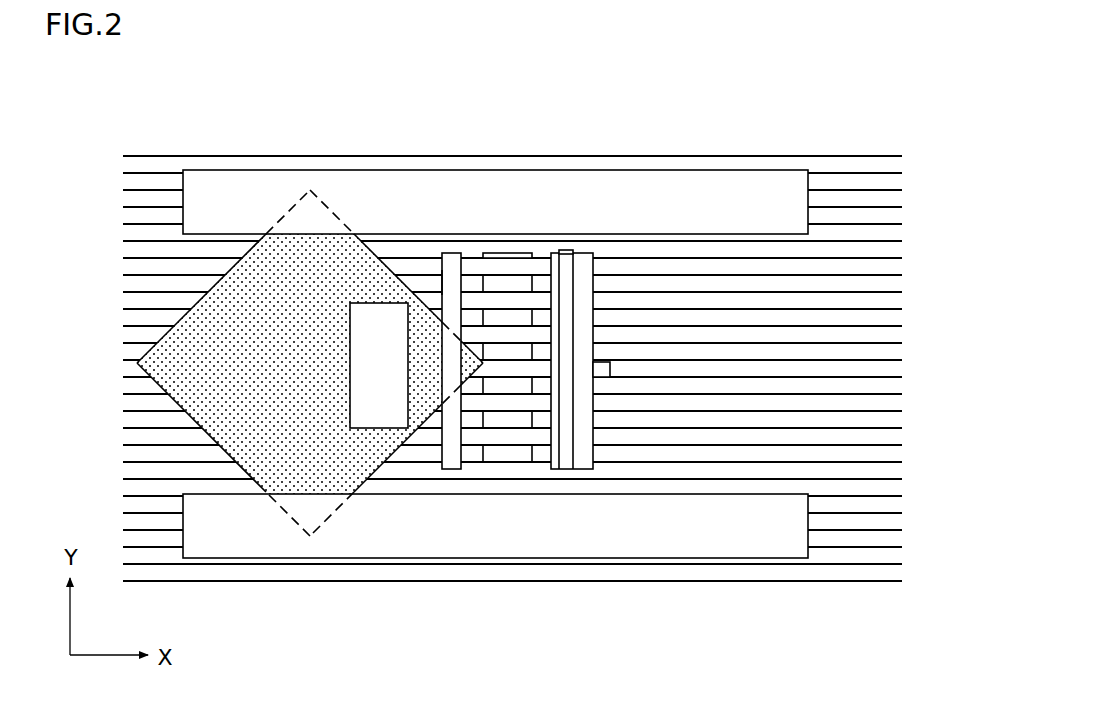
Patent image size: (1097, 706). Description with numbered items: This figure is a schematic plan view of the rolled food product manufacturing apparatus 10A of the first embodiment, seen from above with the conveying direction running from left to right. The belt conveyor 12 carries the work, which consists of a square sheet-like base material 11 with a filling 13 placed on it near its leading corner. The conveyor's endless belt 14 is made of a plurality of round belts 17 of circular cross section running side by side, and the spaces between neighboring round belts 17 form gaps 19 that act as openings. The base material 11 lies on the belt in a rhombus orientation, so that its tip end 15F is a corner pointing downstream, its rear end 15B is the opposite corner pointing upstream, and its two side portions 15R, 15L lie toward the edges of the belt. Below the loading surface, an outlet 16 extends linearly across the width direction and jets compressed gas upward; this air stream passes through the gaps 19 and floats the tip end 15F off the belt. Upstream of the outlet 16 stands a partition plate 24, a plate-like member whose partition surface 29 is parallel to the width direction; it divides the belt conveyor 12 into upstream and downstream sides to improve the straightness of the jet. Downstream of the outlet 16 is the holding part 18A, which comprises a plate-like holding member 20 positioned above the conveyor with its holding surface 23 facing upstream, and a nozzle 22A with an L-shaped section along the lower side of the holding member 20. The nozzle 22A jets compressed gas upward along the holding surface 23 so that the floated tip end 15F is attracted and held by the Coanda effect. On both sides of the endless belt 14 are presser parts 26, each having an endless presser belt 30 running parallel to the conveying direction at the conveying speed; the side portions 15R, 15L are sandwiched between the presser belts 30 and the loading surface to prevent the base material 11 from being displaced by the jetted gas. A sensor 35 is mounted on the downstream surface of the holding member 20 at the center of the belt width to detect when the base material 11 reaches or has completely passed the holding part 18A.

The rolled food product manufacturing apparatus 10A is at (803, 103).
The base material 11 is at (218, 410).
The belt conveyor 12 is at (832, 590).
The filling 13 is at (362, 340).
The endless belt 14 is at (748, 150).
The rear end 15B is at (136, 364).
The tip end 15F is at (433, 363).
The side portion 15L is at (310, 190).
The side portion 15R is at (310, 536).
The outlet 16 is at (503, 472).
The round belt 17 is at (866, 200).
The holding part 18A is at (567, 248).
The gap 19 is at (888, 283).
The holding member 20 is at (565, 298).
The nozzle 22A is at (564, 475).
The holding surface 23 is at (587, 303).
The partition plate 24 is at (452, 472).
The presser part 26 is at (511, 160).
The partition surface 29 is at (441, 282).
The presser belt 30 is at (377, 183).
The sensor 35 is at (610, 370).